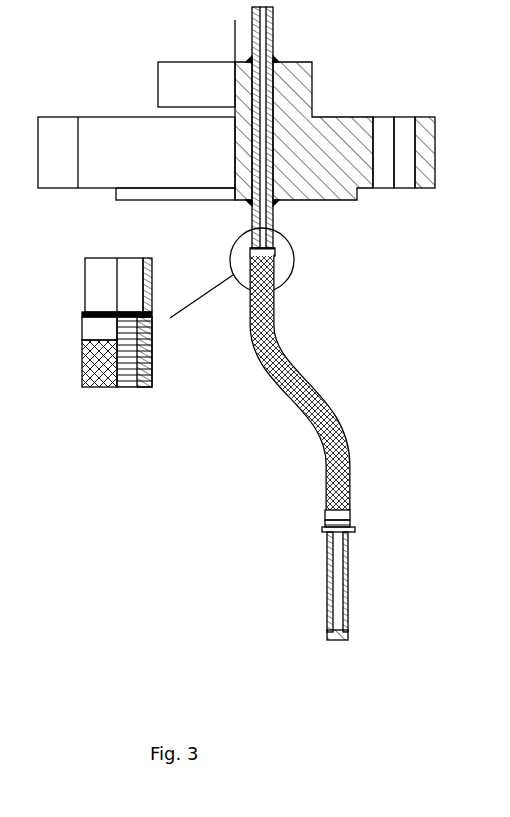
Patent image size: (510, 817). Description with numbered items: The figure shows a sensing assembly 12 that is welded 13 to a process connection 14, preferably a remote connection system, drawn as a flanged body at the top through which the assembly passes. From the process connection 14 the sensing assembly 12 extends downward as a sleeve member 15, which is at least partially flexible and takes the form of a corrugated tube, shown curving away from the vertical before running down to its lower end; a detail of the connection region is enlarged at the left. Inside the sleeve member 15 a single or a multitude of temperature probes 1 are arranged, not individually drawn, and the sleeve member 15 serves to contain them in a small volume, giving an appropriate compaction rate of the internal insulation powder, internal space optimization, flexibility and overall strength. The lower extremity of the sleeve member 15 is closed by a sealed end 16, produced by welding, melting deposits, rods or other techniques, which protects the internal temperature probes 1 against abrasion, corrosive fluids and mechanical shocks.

The process connection 14 is at (339, 105).
The weld 13 is at (291, 200).
The sensing assembly 12 is at (358, 326).
The sleeve member 15 is at (329, 402).
The temperature probes 1 is at (341, 575).
The sealed end 16 is at (341, 645).